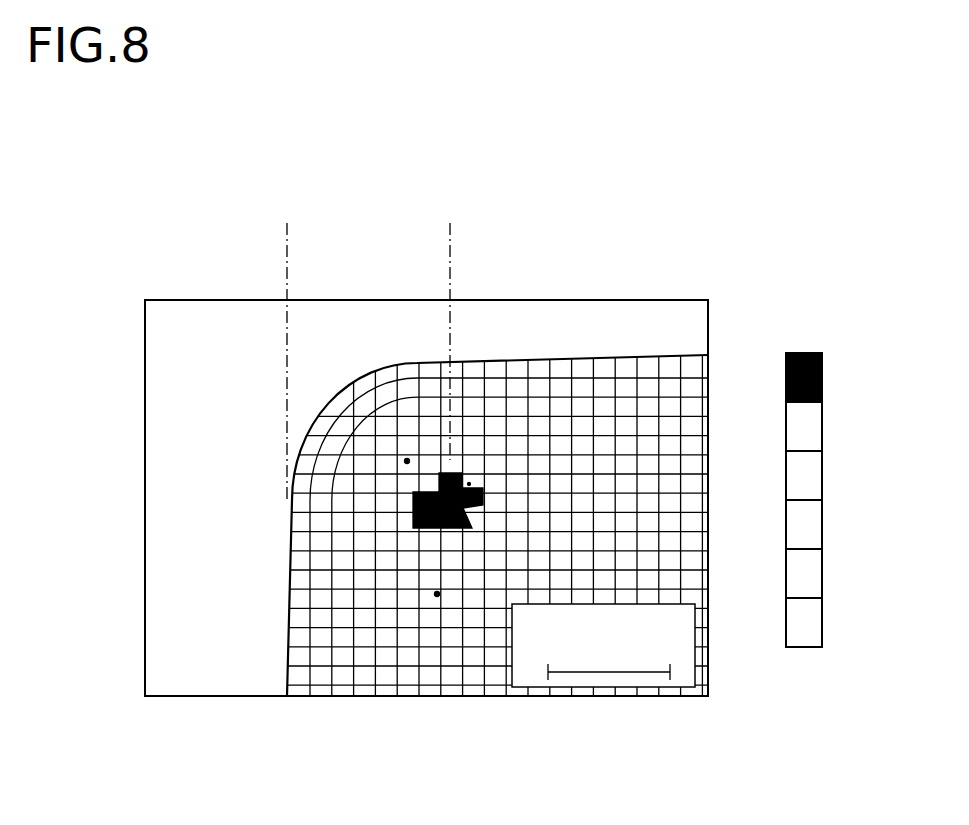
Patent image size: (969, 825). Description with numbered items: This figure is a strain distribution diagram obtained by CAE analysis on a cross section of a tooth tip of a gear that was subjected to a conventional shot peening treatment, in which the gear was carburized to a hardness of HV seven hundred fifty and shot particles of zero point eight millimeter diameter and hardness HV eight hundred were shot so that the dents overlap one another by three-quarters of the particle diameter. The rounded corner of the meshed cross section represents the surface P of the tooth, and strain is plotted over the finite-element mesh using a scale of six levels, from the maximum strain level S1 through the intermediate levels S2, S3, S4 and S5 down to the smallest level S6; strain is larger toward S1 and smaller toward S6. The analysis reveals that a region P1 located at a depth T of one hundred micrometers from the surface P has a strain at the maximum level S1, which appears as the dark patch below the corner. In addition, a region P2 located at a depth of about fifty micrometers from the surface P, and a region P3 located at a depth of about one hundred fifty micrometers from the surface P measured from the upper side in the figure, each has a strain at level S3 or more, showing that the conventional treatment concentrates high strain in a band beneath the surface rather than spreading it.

The surface P is at (276, 560).
The region P1 is at (469, 484).
The region P2 is at (407, 461).
The region P3 is at (437, 594).
The depth T is at (436, 244).
The strain level S1 is at (822, 373).
The strain level S2 is at (822, 425).
The strain level S3 is at (822, 474).
The strain level S4 is at (822, 523).
The strain level S5 is at (822, 572).
The strain level S6 is at (822, 621).